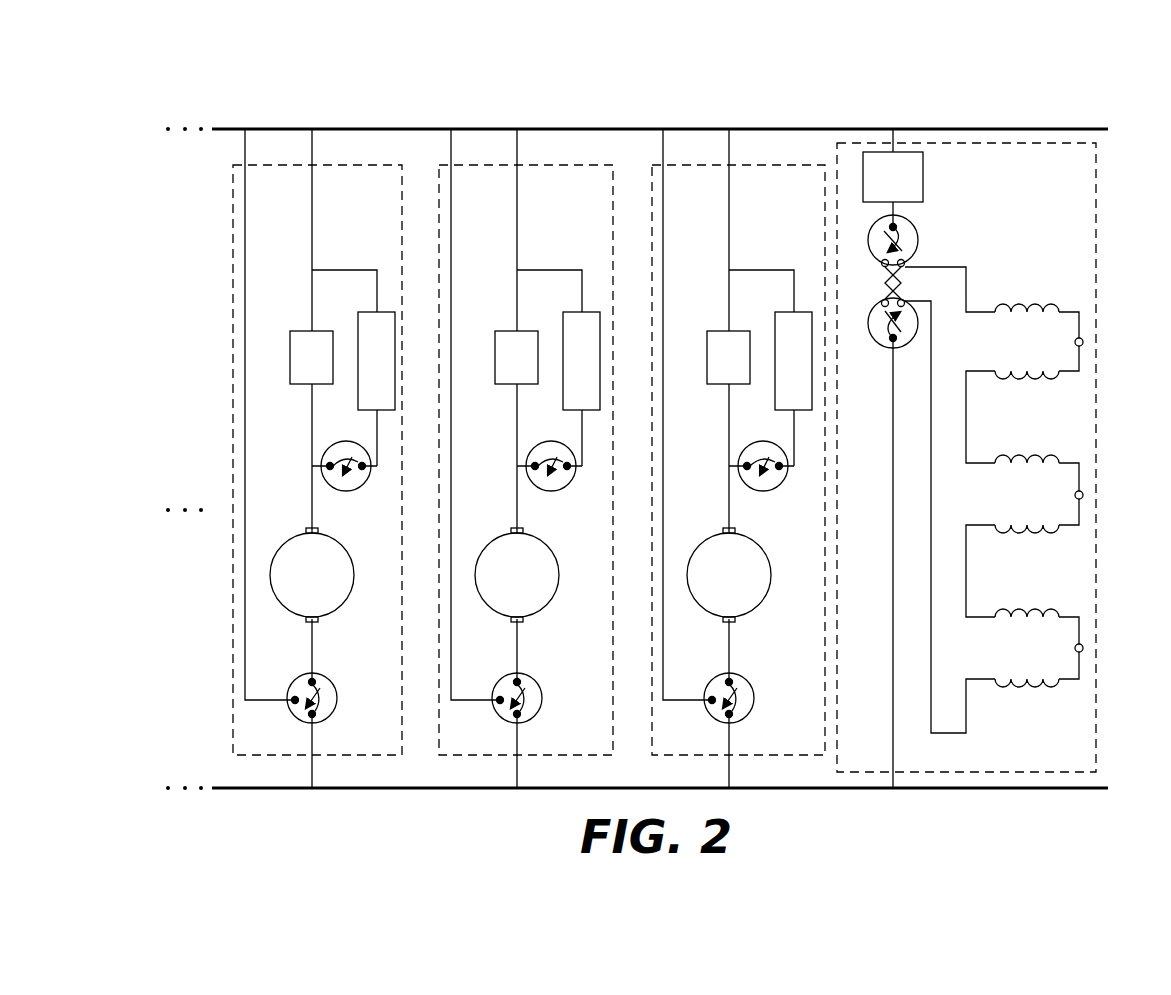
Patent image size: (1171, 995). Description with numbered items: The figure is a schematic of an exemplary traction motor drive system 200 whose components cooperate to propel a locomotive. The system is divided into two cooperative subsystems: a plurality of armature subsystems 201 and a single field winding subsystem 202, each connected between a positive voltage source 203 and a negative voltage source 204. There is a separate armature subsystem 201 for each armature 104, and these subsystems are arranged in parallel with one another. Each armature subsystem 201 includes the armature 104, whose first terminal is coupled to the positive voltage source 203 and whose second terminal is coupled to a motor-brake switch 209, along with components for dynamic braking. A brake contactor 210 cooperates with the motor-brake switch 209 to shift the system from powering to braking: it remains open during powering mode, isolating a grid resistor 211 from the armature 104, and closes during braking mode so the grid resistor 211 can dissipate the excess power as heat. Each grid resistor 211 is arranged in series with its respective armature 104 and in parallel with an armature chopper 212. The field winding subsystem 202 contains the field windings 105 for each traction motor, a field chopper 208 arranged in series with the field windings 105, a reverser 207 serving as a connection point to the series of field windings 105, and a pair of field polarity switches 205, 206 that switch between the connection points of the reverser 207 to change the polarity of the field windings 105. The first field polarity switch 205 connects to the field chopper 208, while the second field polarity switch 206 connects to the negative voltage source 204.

The traction motor drive system 200 is at (320, 104).
The armature subsystem 201 is at (218, 668).
The field winding subsystem 202 is at (1102, 589).
The positive voltage source 203 is at (1104, 112).
The negative voltage source 204 is at (1114, 800).
The first field polarity switch 205 is at (914, 240).
The second field polarity switch 206 is at (878, 332).
The reverser 207 is at (875, 283).
The field chopper 208 is at (893, 177).
The motor-brake switch 209 is at (534, 709).
The brake contactor 210 is at (554, 480).
The grid resistor 211 is at (585, 361).
The armature chopper 212 is at (520, 357).
The armature 104 is at (520, 575).
The field winding 105 is at (994, 500).